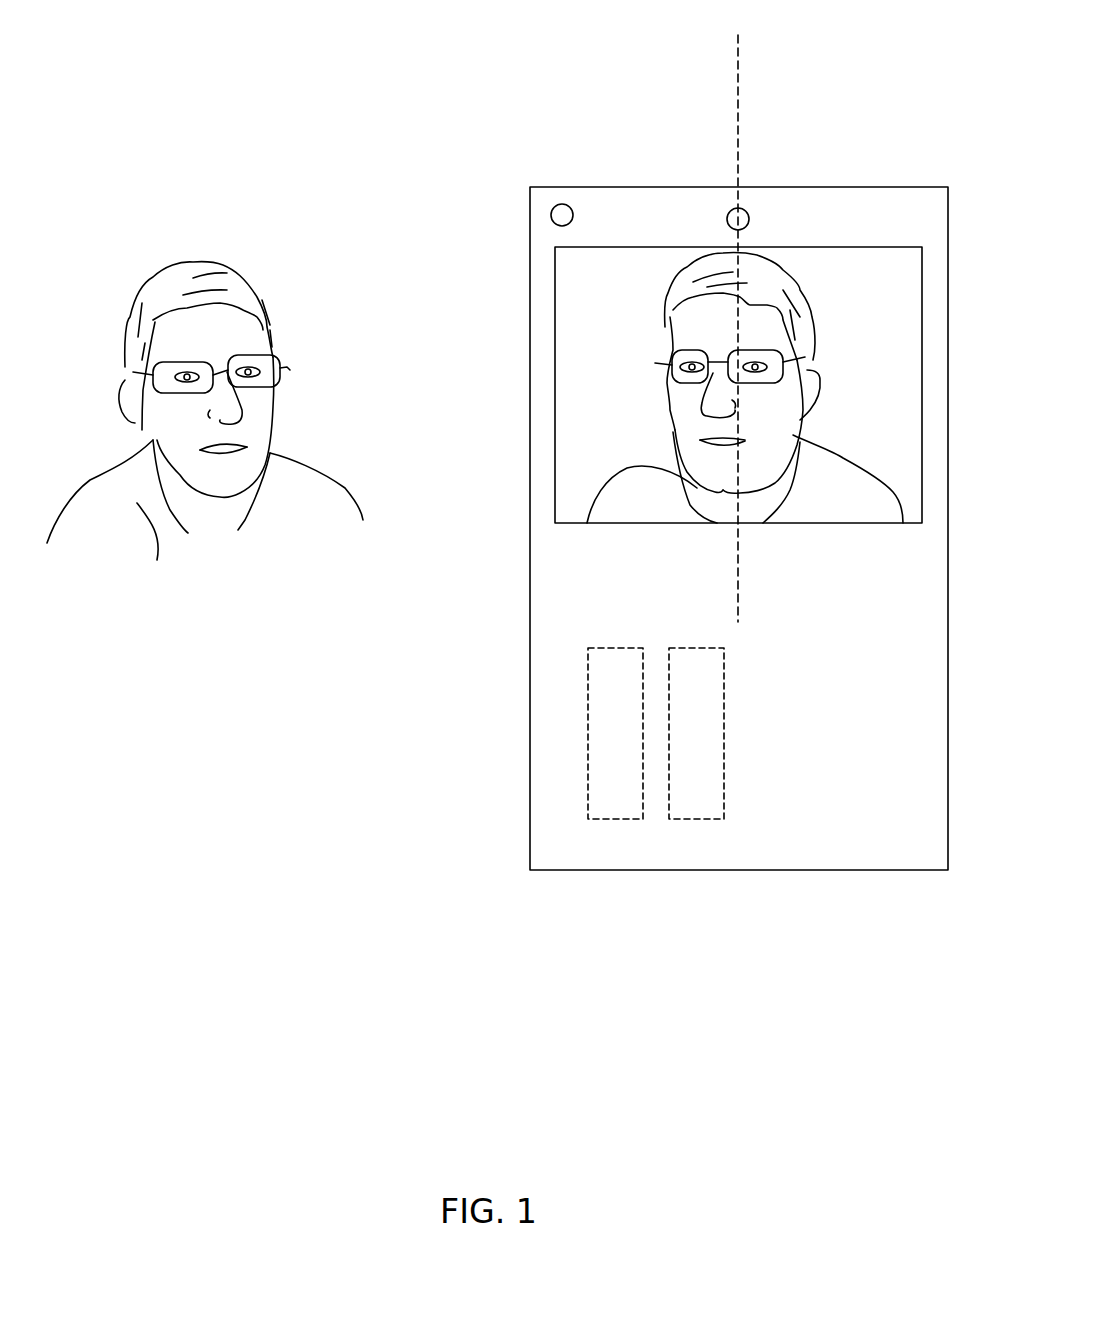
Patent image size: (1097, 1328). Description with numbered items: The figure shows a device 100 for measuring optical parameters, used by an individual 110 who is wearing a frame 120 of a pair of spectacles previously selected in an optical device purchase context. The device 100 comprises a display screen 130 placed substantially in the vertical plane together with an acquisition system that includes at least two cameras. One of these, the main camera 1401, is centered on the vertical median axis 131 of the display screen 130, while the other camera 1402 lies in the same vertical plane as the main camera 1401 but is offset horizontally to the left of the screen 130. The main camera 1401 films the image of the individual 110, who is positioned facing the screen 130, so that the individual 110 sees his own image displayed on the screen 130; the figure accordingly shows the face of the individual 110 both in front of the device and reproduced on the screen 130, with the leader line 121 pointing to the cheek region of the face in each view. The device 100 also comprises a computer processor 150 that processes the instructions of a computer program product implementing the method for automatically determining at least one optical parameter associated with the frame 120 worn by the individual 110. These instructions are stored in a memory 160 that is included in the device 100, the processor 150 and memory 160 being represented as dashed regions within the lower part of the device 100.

The device for measuring optical parameters 100 is at (867, 187).
The individual 110 is at (678, 332).
The frame of a pair of spectacles 120 is at (140, 397).
The cheek of face 121 is at (680, 413).
The display screen 130 is at (555, 520).
The vertical median axis 131 is at (738, 123).
The main camera 1401 is at (737, 208).
The second camera 1402 is at (550, 213).
The computer processor 150 is at (613, 777).
The memory 160 is at (687, 784).